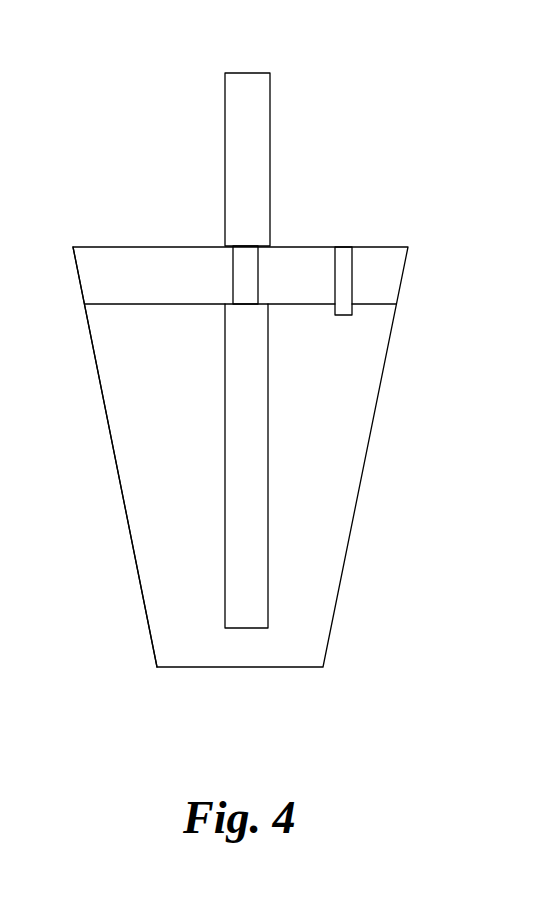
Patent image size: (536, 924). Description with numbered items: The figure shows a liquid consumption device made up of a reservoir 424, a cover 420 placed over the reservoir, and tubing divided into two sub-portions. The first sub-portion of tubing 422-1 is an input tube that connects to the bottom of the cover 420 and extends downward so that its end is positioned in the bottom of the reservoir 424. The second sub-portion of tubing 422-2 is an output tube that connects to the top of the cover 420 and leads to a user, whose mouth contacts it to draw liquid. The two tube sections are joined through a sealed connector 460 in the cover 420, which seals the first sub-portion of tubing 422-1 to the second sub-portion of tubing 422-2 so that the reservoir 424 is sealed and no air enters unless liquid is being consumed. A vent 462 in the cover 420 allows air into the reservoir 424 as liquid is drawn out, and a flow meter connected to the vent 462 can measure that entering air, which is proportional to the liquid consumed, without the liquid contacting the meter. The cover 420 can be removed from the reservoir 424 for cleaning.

The cover 420 is at (120, 246).
The reservoir 424 is at (108, 432).
The second sub-portion of tubing 422-2 is at (253, 73).
The sealed connector 460 is at (260, 272).
The first sub-portion of tubing 422-1 is at (269, 460).
The vent 462 is at (344, 247).